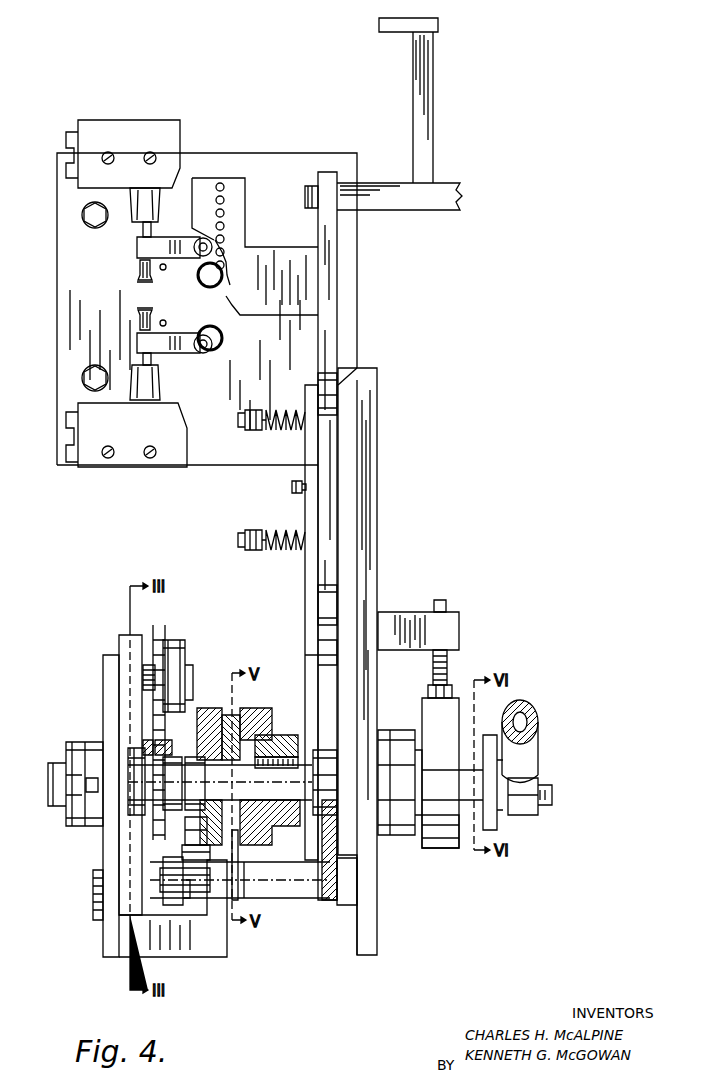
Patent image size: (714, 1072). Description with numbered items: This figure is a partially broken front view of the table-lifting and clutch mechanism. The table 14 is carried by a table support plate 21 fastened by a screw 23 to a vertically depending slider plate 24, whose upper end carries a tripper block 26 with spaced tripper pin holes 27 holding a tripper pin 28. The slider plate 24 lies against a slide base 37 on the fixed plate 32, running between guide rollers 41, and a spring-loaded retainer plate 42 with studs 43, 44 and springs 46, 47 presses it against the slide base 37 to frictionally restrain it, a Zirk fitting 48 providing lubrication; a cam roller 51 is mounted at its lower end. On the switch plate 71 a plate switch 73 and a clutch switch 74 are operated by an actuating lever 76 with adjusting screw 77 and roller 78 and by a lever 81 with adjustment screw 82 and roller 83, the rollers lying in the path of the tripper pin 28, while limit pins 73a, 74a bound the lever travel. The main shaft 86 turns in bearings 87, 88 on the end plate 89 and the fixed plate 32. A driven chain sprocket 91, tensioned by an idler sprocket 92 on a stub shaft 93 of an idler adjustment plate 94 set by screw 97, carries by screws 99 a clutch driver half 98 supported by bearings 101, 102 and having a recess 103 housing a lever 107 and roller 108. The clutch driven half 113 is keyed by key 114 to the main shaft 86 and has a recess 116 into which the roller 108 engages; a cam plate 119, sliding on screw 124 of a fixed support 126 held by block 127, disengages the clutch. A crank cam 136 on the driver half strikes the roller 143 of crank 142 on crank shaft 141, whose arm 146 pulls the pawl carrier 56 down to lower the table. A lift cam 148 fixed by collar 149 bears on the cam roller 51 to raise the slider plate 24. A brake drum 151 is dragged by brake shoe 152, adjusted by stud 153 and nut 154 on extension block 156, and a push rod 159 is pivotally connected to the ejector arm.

The table 14 is at (448, 48).
The table support plate 21 is at (424, 205).
The screw 23 is at (308, 188).
The slider plate 24 is at (338, 262).
The tripper block 26 is at (254, 262).
The tripper pin holes 27 is at (224, 202).
The tripper pin 28 is at (226, 268).
The fixed plate 32 is at (378, 415).
The slide base 37 is at (348, 372).
The guide rollers 41 is at (318, 385).
The retainer plate 42 is at (304, 455).
The stud 43 is at (256, 432).
The stud 44 is at (252, 536).
The spring 46 is at (281, 410).
The spring 47 is at (280, 530).
The Zirk fitting 48 is at (292, 487).
The cam roller 51 is at (318, 605).
The pawl carrier 56 is at (329, 900).
The switch plate 71 is at (58, 224).
The plate switch 73 is at (130, 122).
The limit pin 73a is at (162, 271).
The clutch switch 74 is at (122, 470).
The limit pin 74a is at (163, 320).
The actuating lever 76 is at (172, 244).
The adjusting screw 77 is at (139, 275).
The roller 78 is at (204, 280).
The lever 81 is at (178, 354).
The adjustment screw 82 is at (140, 316).
The roller 83 is at (222, 336).
The main shaft 86 is at (220, 782).
The bearing 87 is at (70, 828).
The bearing 88 is at (406, 836).
The end plate 89 is at (105, 660).
The driven chain sprocket 91 is at (166, 742).
The idler sprocket 92 is at (175, 642).
The stub shaft 93 is at (149, 664).
The idler adjustment plate 94 is at (125, 637).
The screw 97 is at (93, 882).
The clutch driver half 98 is at (205, 708).
The screws 99 is at (143, 746).
The bearing 101 is at (173, 783).
The bearing 102 is at (195, 783).
The recess 103 is at (230, 716).
The lever 107 is at (196, 826).
The roller 108 is at (273, 836).
The clutch driven half 113 is at (278, 735).
The key 114 is at (285, 757).
The recess 116 is at (247, 716).
The cam plate 119 is at (256, 886).
The screw 124 is at (246, 874).
The fixed support 126 is at (233, 902).
The block 127 is at (158, 957).
The crank cam 136 is at (188, 849).
The crank shaft 141 is at (240, 891).
The crank 142 is at (172, 905).
The roller 143 is at (186, 900).
The arm 146 is at (350, 906).
The lift cam 148 is at (318, 656).
The collar 149 is at (325, 782).
The brake drum 151 is at (440, 850).
The brake shoe 152 is at (426, 720).
The stud 153 is at (448, 668).
The nut 154 is at (430, 692).
The extension block 156 is at (398, 620).
The push rod 159 is at (540, 758).